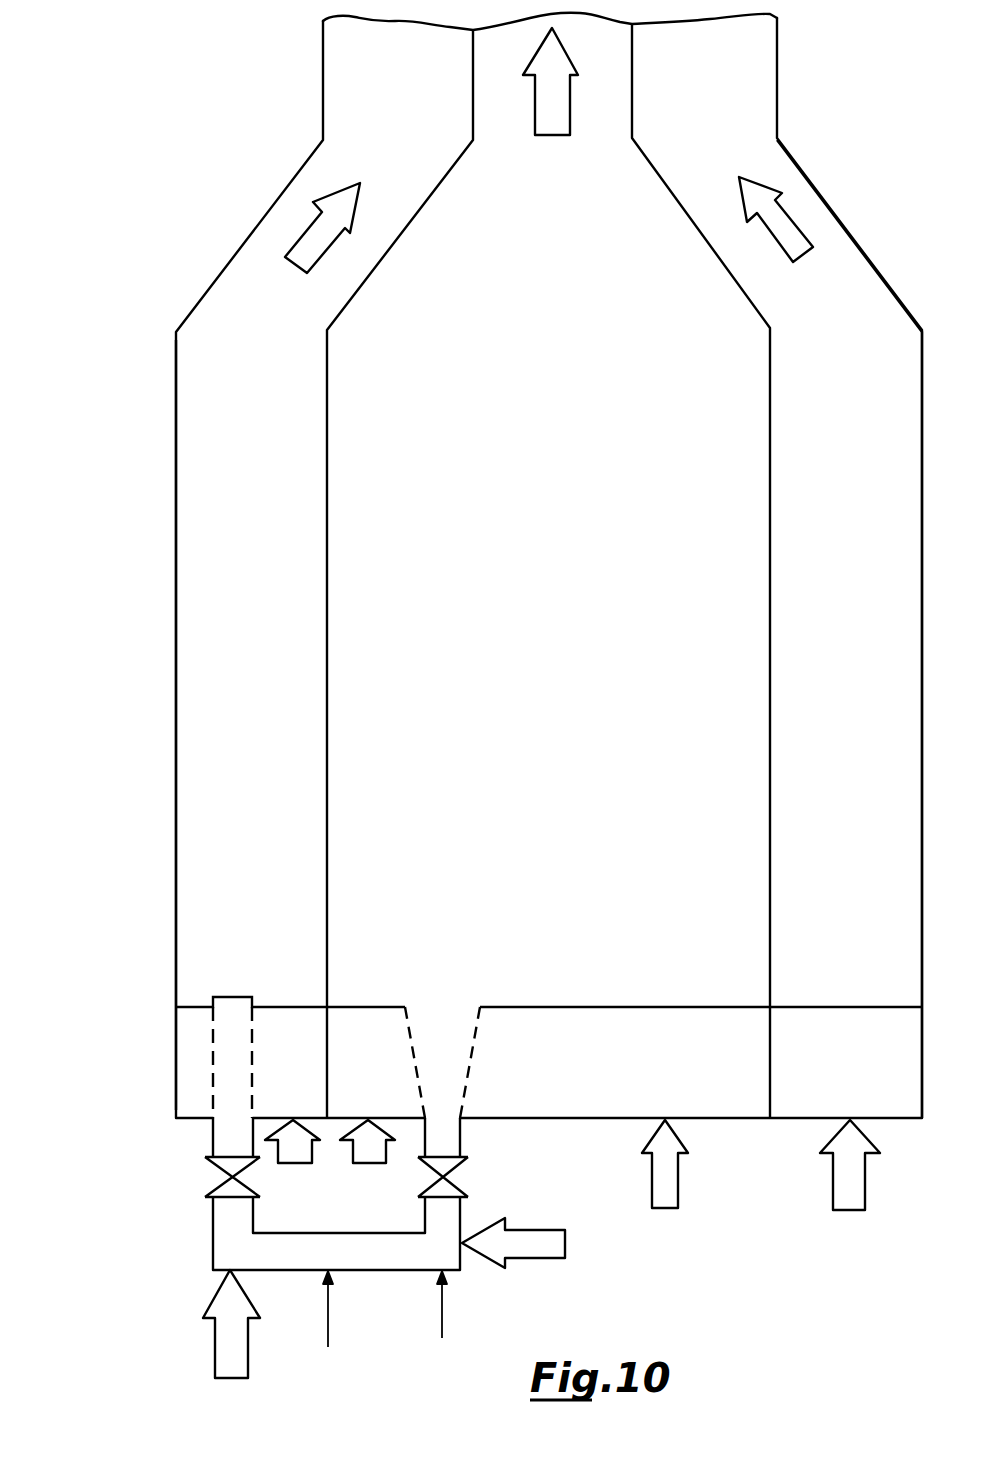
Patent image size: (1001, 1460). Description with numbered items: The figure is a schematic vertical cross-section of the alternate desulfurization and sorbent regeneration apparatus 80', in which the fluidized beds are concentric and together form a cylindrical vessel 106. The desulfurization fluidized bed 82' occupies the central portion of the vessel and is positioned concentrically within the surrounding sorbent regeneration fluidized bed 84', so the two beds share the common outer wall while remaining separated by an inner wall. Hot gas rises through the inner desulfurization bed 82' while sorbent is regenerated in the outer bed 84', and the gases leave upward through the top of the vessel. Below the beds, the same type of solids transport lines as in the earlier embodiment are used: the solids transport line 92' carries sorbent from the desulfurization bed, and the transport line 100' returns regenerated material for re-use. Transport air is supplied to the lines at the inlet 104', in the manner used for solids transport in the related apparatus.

The alternate embodiment of apparatus for desulfurization and sorbent regeneration 80' is at (535, 611).
The cylindrical vessel 106 is at (175, 461).
The desulfurization fluidized bed 82' is at (548, 571).
The sorbent regeneration fluidized bed 84' is at (849, 629).
The solids transport line 92' is at (549, 1057).
The transport line 100' is at (298, 1192).
The gas inlet 104' is at (562, 1247).